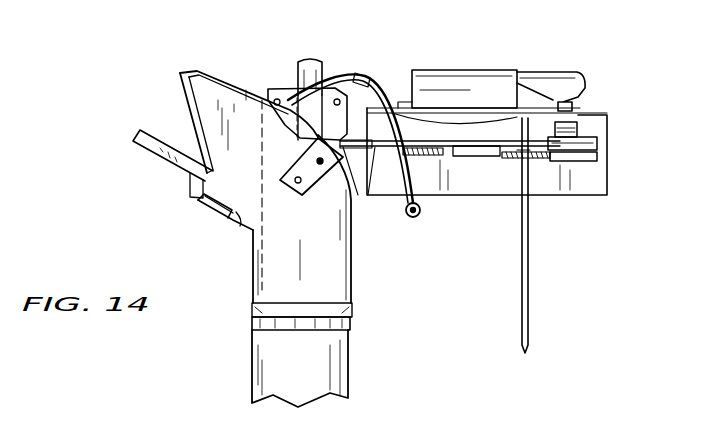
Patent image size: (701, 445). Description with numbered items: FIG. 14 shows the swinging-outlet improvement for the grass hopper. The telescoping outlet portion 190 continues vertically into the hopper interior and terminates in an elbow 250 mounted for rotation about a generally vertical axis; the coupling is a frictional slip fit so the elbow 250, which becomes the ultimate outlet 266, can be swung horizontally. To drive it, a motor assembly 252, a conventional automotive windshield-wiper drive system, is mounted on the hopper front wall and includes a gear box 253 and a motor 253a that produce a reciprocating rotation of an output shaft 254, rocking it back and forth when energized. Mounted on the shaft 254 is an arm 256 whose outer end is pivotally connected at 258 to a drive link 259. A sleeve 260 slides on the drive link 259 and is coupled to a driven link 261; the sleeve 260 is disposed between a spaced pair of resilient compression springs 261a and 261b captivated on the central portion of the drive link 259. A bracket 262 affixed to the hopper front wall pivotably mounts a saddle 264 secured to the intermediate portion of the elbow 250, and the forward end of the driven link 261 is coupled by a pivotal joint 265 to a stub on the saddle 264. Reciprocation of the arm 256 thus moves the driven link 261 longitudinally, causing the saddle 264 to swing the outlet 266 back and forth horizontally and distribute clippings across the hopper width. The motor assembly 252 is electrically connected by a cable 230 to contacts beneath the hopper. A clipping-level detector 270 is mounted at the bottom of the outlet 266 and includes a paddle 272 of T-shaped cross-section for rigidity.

The telescoping outlet portion 190 is at (346, 347).
The cable 230 is at (529, 322).
The elbow 250 is at (353, 283).
The motor assembly 252 is at (542, 40).
The gear box 253 is at (560, 74).
The motor 253a is at (434, 70).
The output shaft 254 is at (578, 130).
The arm 256 is at (598, 143).
The pivotal connection 258 is at (598, 153).
The drive link 259 is at (537, 160).
The sleeve 260 is at (454, 158).
The driven link 261 is at (366, 166).
The resilient compression spring 261a is at (518, 160).
The resilient compression spring 261b is at (427, 156).
The bracket 262 is at (268, 90).
The saddle 264 is at (310, 180).
The pivotal joint 265 is at (349, 148).
The ultimate outlet 266 is at (183, 92).
The clipping-level detector 270 is at (190, 215).
The paddle 272 is at (163, 157).